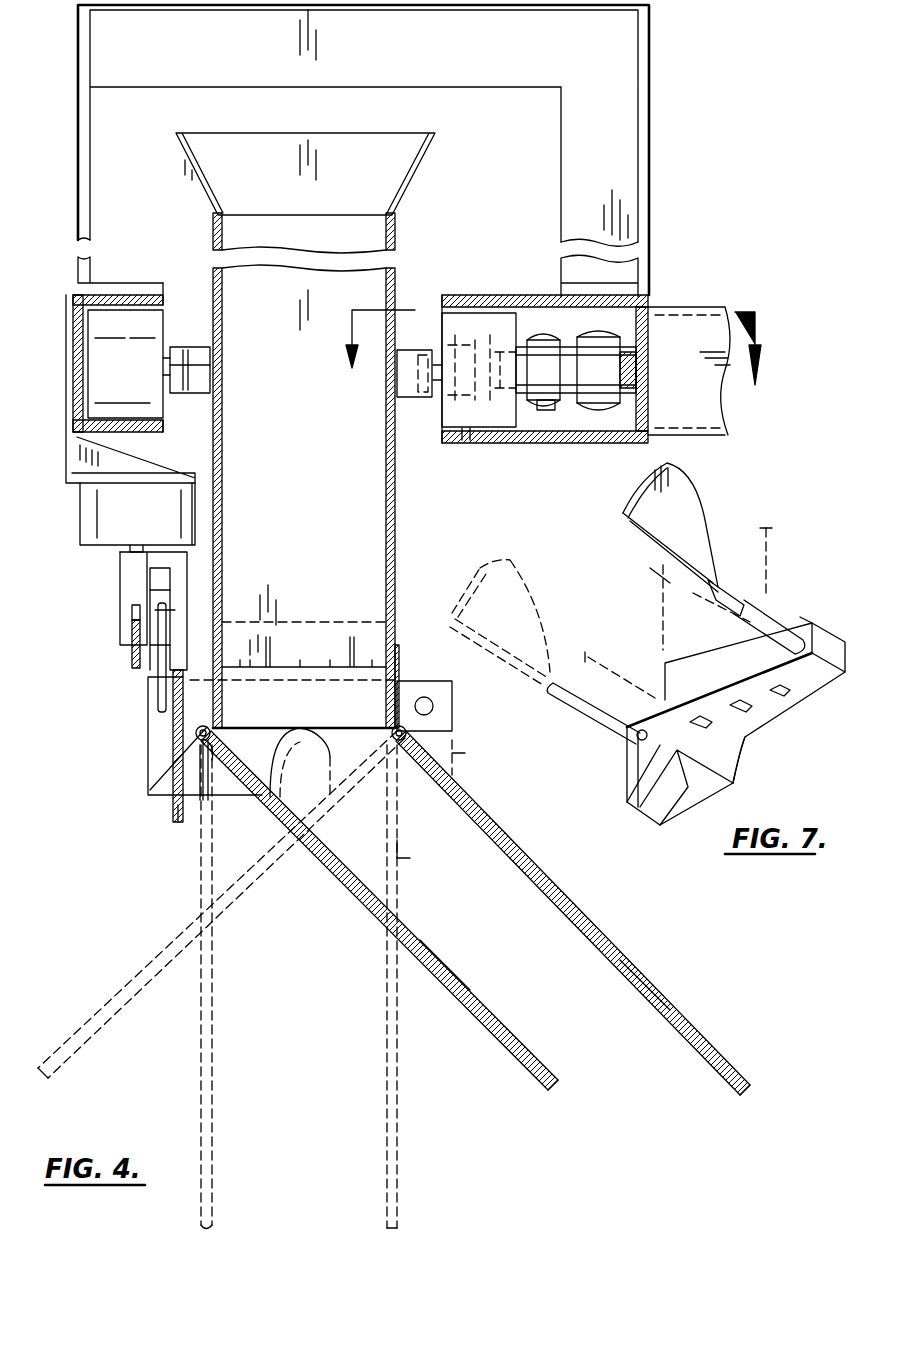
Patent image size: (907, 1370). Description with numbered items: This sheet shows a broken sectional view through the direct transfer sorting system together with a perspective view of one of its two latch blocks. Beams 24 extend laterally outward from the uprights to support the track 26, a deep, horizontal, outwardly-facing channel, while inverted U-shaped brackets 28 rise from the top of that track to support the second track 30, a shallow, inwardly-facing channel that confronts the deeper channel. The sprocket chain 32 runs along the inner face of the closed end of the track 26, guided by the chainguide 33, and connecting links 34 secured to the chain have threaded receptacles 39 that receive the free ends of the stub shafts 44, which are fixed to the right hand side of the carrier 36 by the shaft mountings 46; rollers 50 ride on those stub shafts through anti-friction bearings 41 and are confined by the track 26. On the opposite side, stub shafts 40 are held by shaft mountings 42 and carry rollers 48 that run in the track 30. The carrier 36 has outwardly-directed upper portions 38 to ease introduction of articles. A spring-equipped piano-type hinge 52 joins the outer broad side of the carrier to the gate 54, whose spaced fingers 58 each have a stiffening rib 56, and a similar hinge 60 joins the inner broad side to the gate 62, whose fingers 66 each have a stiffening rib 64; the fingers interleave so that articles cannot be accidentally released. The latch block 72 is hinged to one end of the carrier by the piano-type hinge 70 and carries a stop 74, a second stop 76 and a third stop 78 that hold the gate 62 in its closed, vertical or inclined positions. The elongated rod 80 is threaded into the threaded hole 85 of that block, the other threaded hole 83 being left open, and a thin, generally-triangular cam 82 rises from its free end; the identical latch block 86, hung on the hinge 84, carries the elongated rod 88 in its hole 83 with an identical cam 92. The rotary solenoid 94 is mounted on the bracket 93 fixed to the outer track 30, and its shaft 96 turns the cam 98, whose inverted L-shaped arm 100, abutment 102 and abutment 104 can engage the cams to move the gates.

In FIG. 4, the beams 24 is at (708, 432).
In FIG. 4, the track 26 is at (563, 440).
In FIG. 4, the inverted U-shaped brackets 28 is at (78, 262).
In FIG. 4, the second track 30 is at (147, 435).
In FIG. 4, the sprocket chain 32 is at (640, 320).
In FIG. 4, the chainguide 33 is at (638, 378).
In FIG. 4, the connecting links 34 is at (568, 347).
In FIG. 4, the carrier 36 is at (414, 266).
In FIG. 7, the carrier 36 is at (780, 559).
In FIG. 4, the outwardly-directed upper portions 38 is at (200, 180).
In FIG. 4, the threaded receptacles 39 is at (527, 325).
In FIG. 4, the stub shafts 40 is at (200, 368).
In FIG. 4, the anti-friction bearings 41 is at (462, 432).
In FIG. 4, the shaft mountings 42 is at (200, 352).
In FIG. 4, the stub shafts 44 is at (427, 397).
In FIG. 4, the shaft mountings 46 is at (408, 397).
In FIG. 4, the rollers 48 is at (93, 377).
In FIG. 4, the rollers 50 is at (478, 322).
In FIG. 4, the spring-equipped piano-type hinge 52 is at (237, 740).
In FIG. 4, the gate 54 is at (367, 908).
In FIG. 4, the stiffening rib 56 is at (540, 1013).
In FIG. 4, the fingers 58 is at (550, 1092).
In FIG. 4, the spring-equipped piano-type hinge 60 is at (393, 662).
In FIG. 4, the gate 62 is at (635, 973).
In FIG. 4, the stiffening rib 64 is at (657, 1017).
In FIG. 4, the fingers 66 is at (757, 1090).
In FIG. 7, the spring-equipped piano-type hinge 70 is at (688, 650).
In FIG. 4, the latch block 72 is at (465, 752).
In FIG. 7, the latch block 72 is at (783, 727).
In FIG. 4, the stop 74 is at (233, 797).
In FIG. 7, the stop 74 is at (727, 767).
In FIG. 4, the second stop 76 is at (198, 815).
In FIG. 7, the second stop 76 is at (705, 792).
In FIG. 4, the third stop 78 is at (158, 797).
In FIG. 7, the third stop 78 is at (640, 787).
In FIG. 7, the elongated rod 80 is at (782, 622).
In FIG. 4, the cam 82 is at (173, 810).
In FIG. 7, the cam 82 is at (682, 500).
In FIG. 7, the threaded hole 83 is at (642, 743).
In FIG. 4, the spring-equipped piano-type hinge 84 is at (365, 662).
In FIG. 4, the threaded hole 85 is at (428, 703).
In FIG. 7, the threaded hole 85 is at (815, 632).
In FIG. 4, the latch block 86 is at (142, 753).
In FIG. 4, the elongated rod 88 is at (172, 710).
In FIG. 7, the elongated rod 88 is at (565, 695).
In FIG. 4, the cam 92 is at (160, 665).
In FIG. 7, the cam 92 is at (508, 562).
In FIG. 4, the bracket 93 is at (65, 432).
In FIG. 4, the rotary solenoid 94 is at (90, 525).
In FIG. 4, the shaft 96 is at (137, 553).
In FIG. 4, the cam 98 is at (127, 582).
In FIG. 4, the inverted L-shaped arm 100 is at (200, 583).
In FIG. 4, the abutment 102 is at (140, 663).
In FIG. 4, the abutment 104 is at (133, 612).